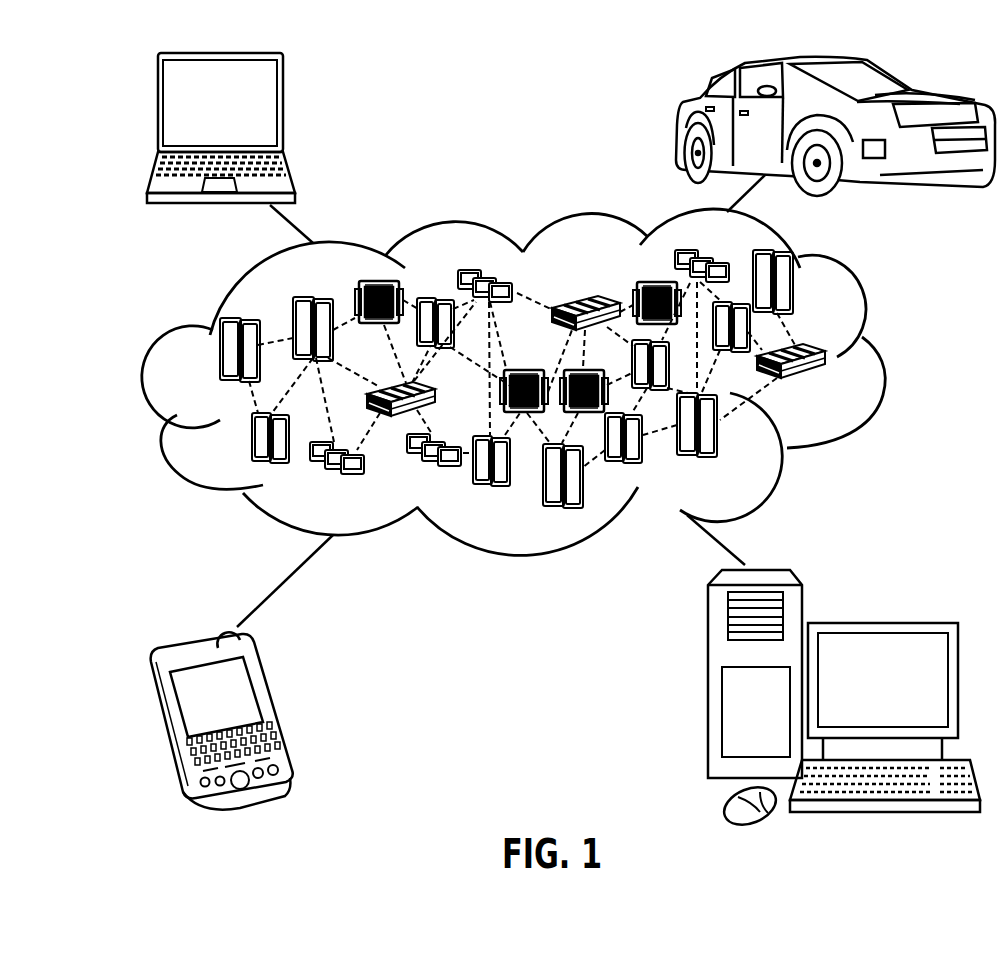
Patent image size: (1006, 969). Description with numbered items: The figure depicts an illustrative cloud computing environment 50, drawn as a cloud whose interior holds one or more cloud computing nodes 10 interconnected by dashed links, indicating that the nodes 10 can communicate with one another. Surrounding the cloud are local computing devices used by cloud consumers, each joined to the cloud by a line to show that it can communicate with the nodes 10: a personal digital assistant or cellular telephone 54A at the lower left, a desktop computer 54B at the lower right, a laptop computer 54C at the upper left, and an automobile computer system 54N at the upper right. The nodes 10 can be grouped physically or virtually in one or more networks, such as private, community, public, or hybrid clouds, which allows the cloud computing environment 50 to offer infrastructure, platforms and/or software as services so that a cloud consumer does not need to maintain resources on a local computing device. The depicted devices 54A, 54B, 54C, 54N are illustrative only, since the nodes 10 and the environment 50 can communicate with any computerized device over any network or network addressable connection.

The cloud computing nodes 10 is at (838, 391).
The cloud computing environment 50 is at (880, 355).
The personal digital assistant (PDA) or cellular telephone 54A is at (273, 707).
The desktop computer 54B is at (882, 622).
The laptop computer 54C is at (283, 108).
The automobile computer system 54N is at (683, 122).